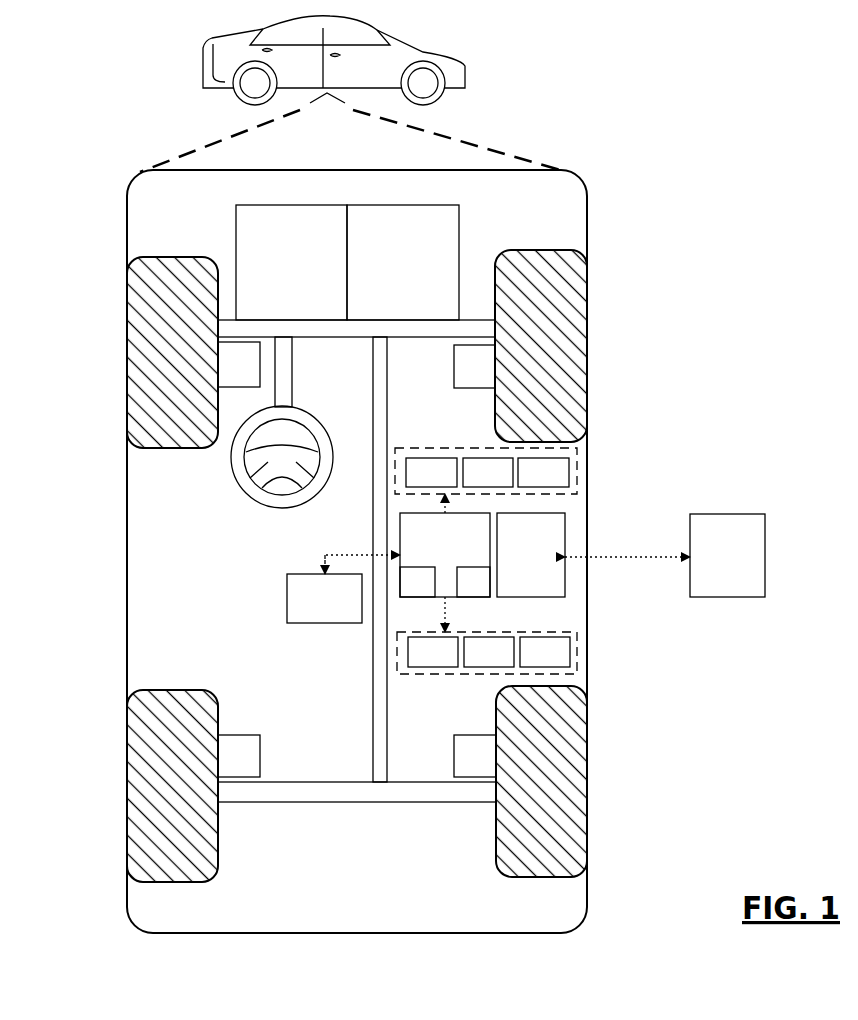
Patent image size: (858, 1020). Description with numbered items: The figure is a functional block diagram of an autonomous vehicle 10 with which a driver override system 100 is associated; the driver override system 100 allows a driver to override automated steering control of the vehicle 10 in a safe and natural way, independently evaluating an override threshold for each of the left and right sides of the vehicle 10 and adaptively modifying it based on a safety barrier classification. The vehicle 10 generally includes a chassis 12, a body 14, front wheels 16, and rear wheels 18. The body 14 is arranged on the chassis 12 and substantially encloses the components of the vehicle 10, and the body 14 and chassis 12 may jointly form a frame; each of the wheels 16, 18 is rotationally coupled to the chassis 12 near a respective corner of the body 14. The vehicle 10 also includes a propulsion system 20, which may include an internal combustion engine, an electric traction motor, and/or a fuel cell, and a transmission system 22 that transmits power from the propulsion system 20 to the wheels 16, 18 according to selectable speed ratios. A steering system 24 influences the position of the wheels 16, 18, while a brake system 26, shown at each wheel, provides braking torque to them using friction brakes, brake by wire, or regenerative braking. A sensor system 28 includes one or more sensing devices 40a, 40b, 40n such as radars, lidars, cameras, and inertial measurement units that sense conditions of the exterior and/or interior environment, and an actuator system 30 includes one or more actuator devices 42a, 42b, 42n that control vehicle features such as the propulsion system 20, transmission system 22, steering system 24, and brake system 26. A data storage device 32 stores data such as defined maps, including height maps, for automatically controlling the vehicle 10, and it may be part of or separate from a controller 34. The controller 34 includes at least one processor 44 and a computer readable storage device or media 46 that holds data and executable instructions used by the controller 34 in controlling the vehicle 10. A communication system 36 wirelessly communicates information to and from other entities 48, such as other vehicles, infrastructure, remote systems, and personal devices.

The vehicle 10 is at (203, 68).
The driver override system 100 is at (618, 177).
The chassis 12 is at (371, 717).
The body 14 is at (127, 537).
The front wheels 16 is at (172, 257).
The rear wheels 18 is at (190, 882).
The propulsion system 20 is at (291, 262).
The transmission system 22 is at (403, 262).
The steering system 24 is at (320, 364).
The brake system 26 is at (357, 559).
The sensor system 28 is at (428, 447).
The actuator system 30 is at (400, 693).
The data storage device 32 is at (324, 598).
The controller 34 is at (445, 555).
The communication system 36 is at (531, 555).
The sensing device 40a is at (431, 472).
The sensing device 40b is at (488, 472).
The sensing device 40n is at (543, 472).
The actuator device 42a is at (433, 652).
The actuator device 42b is at (489, 652).
The actuator device 42n is at (545, 652).
The processor 44 is at (417, 582).
The computer readable storage device or media 46 is at (473, 582).
The other entities 48 is at (727, 555).